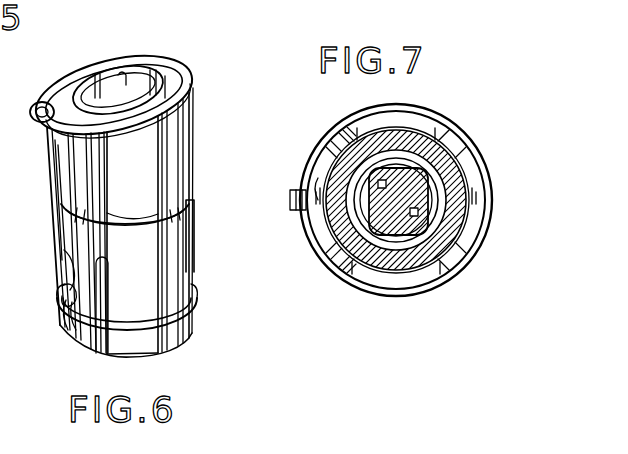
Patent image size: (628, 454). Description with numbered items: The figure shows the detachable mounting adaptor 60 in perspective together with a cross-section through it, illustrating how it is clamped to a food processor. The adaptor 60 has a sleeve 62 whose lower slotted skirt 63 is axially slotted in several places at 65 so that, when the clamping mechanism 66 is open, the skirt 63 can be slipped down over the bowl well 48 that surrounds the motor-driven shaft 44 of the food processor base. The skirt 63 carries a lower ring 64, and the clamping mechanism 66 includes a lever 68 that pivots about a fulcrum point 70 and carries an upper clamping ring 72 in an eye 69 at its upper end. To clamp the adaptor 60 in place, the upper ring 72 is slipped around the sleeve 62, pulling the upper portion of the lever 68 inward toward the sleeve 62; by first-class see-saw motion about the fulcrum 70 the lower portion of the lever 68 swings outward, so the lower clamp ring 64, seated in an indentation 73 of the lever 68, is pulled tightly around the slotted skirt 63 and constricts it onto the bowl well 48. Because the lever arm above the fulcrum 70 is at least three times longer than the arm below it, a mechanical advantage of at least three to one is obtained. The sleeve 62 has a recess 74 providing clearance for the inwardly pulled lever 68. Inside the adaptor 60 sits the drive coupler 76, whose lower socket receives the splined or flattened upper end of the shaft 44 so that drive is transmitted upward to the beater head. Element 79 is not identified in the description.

In FIG. 6, the detachable mounting adaptor 60 is at (224, 139).
In FIG. 6, the sleeve 62 is at (146, 184).
In FIG. 6, the lower slotted skirt 63 is at (153, 253).
In FIG. 6, the lower ring 64 is at (197, 300).
In FIG. 7, the lower ring 64 is at (474, 153).
In FIG. 6, the axial slots 65 is at (195, 270).
In FIG. 7, the axial slots 65 is at (312, 160).
In FIG. 6, the clamping mechanism 66 is at (46, 216).
In FIG. 6, the lever 68 is at (53, 182).
In FIG. 7, the lever 68 is at (290, 200).
In FIG. 6, the eye 69 is at (28, 114).
In FIG. 6, the fulcrum point 70 is at (60, 296).
In FIG. 6, the upper clamping ring 72 is at (115, 52).
In FIG. 7, the indentation 73 is at (320, 175).
In FIG. 6, the recess 74 is at (72, 238).
In FIG. 6, the drive coupler 76 is at (150, 70).
In FIG. 7, the drive coupler 76 is at (433, 203).
In FIG. 6, the inner collar 79 is at (117, 72).
In FIG. 7, the bowl well 48 is at (458, 188).
In FIG. 7, the motor-driven shaft 44 is at (398, 235).